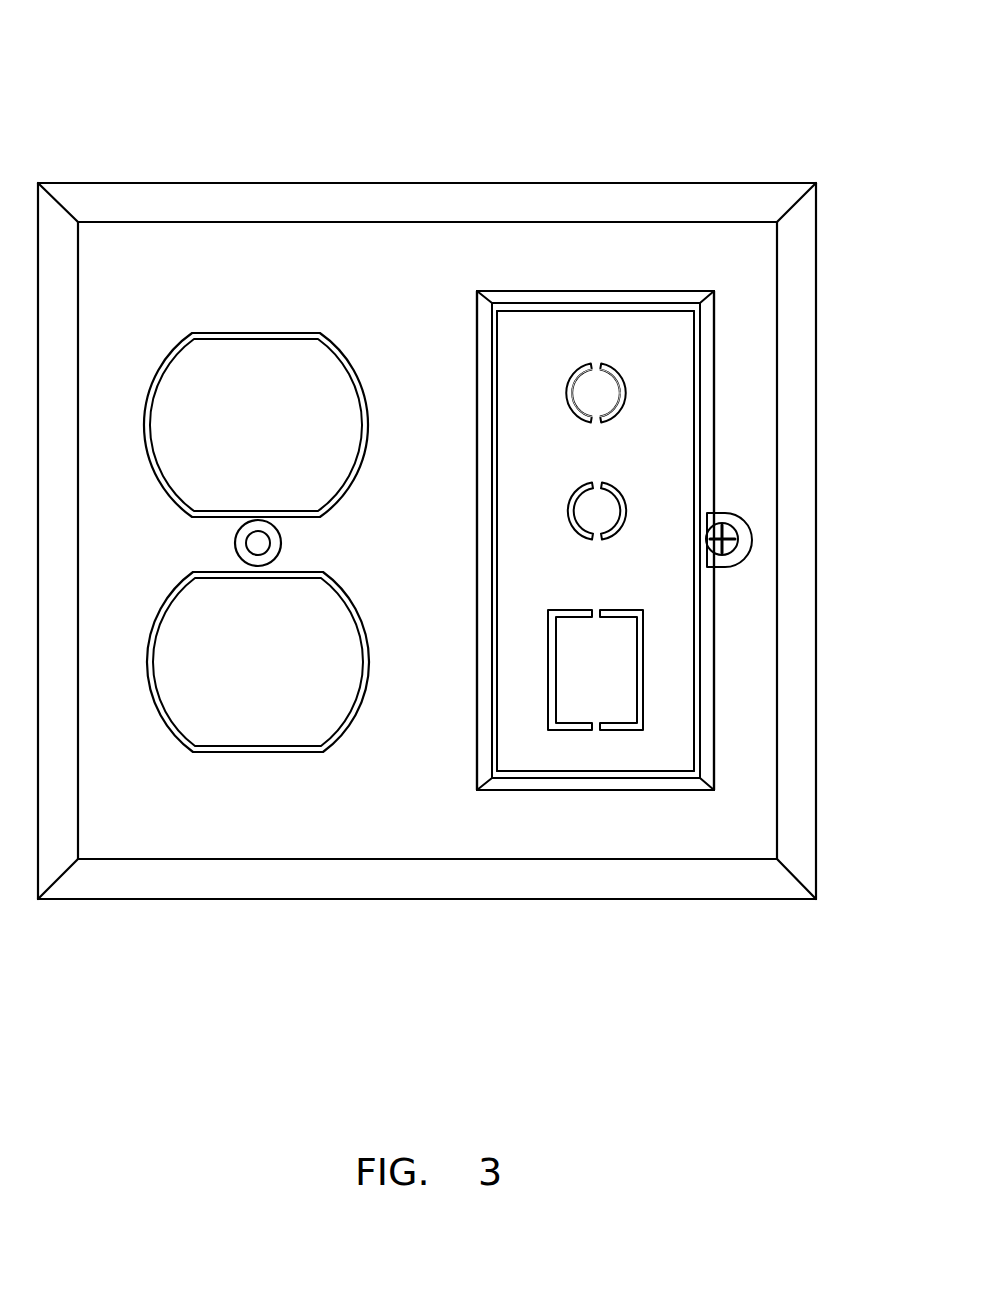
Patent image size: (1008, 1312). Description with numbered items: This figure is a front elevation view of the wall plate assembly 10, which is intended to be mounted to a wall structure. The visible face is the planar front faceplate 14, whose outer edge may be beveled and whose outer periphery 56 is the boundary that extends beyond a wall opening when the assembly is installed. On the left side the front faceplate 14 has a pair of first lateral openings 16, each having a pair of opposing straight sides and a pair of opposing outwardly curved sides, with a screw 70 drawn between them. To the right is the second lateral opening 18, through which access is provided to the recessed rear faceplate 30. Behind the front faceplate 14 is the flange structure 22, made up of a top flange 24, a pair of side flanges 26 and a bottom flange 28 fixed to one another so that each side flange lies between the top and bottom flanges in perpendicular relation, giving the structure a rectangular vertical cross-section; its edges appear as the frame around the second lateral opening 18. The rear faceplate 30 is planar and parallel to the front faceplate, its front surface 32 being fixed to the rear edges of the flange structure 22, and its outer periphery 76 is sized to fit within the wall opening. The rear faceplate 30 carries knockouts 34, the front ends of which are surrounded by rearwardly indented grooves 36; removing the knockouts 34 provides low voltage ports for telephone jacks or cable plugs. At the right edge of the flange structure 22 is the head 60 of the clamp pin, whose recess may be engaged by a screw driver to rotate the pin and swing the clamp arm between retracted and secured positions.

The wall plate assembly 10 is at (333, 160).
The front faceplate 14 is at (145, 289).
The first lateral openings 16 is at (264, 432).
The second lateral opening 18 is at (497, 367).
The flange structure 22 is at (505, 270).
The top flange 24 is at (590, 290).
The side flanges 26 is at (714, 378).
The bottom flange 28 is at (640, 791).
The rear faceplate 30 is at (552, 359).
The front surface 32 is at (552, 523).
The knockouts 34 is at (604, 397).
The grooves 36 is at (612, 372).
The outer periphery 56 is at (167, 900).
The head 60 is at (738, 538).
The receptacle mounting screw 70 is at (258, 543).
The outer periphery 76 is at (477, 693).